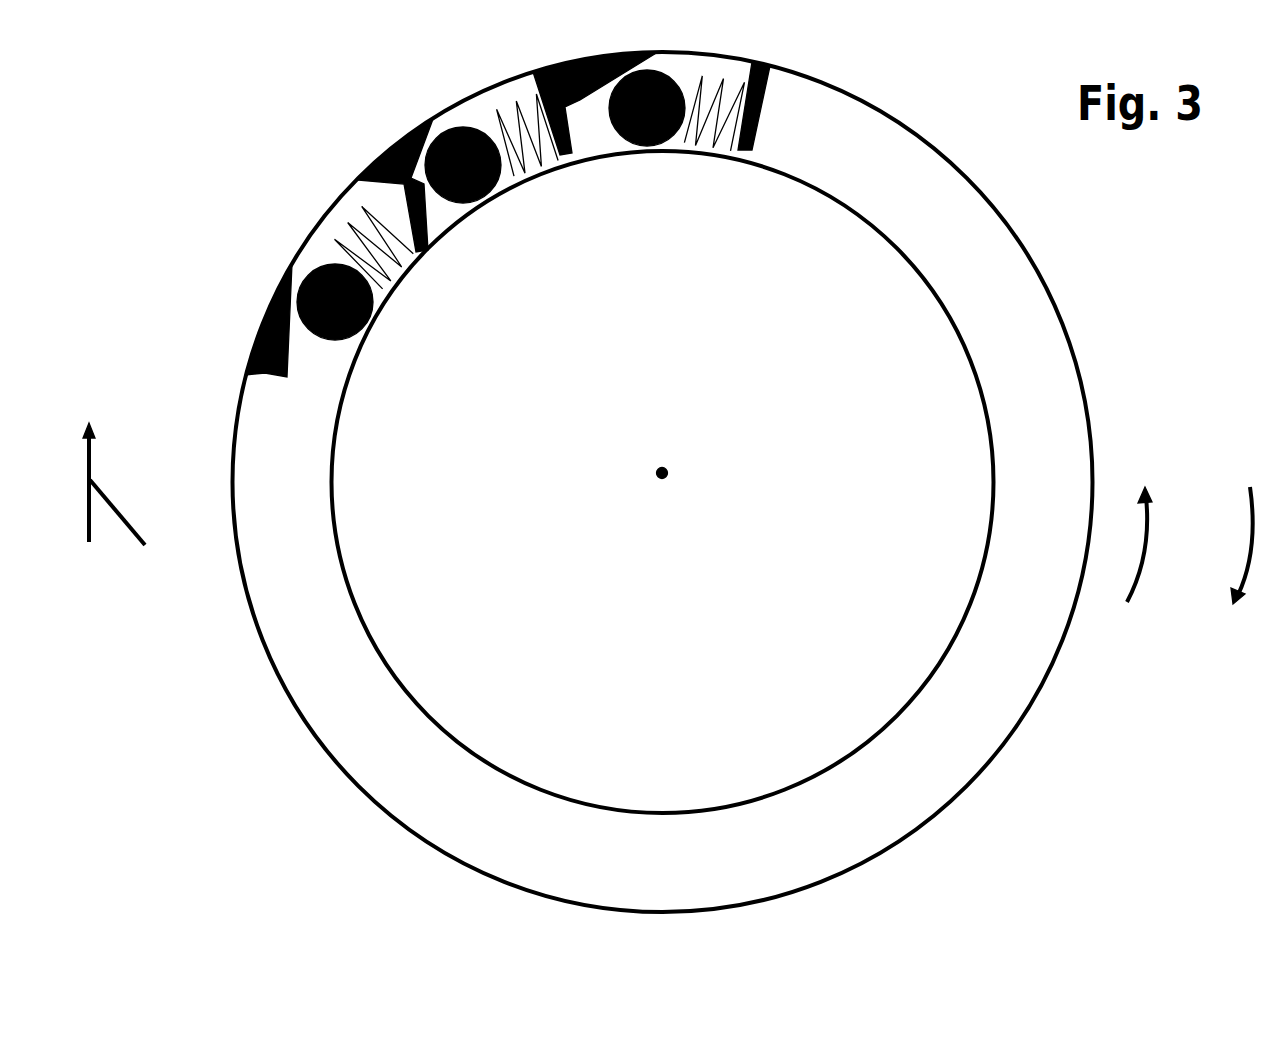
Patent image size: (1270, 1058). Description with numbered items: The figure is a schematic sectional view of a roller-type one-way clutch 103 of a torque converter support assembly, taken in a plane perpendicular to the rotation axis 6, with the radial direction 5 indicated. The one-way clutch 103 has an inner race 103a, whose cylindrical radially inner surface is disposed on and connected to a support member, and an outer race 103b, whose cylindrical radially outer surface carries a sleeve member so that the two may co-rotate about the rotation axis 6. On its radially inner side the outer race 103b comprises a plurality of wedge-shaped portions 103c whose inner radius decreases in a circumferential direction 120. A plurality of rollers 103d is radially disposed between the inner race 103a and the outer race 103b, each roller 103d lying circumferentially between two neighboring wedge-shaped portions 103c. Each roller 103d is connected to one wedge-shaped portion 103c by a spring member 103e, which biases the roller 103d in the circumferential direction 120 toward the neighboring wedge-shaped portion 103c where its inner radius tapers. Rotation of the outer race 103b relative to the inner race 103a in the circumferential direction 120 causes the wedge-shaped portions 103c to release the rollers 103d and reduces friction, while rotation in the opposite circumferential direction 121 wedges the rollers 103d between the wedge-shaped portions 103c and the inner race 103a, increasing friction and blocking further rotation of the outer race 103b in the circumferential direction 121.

The one-way clutch 103 is at (262, 741).
The inner race 103a is at (922, 688).
The outer race 103b is at (1075, 345).
The wedge-shaped portion 103c is at (290, 348).
The roller 103d is at (372, 323).
The spring member 103e is at (340, 223).
The rotation axis 6 is at (668, 467).
The radial direction 5 is at (124, 507).
The circumferential direction 120 is at (1142, 553).
The circumferential direction 121 is at (1250, 537).